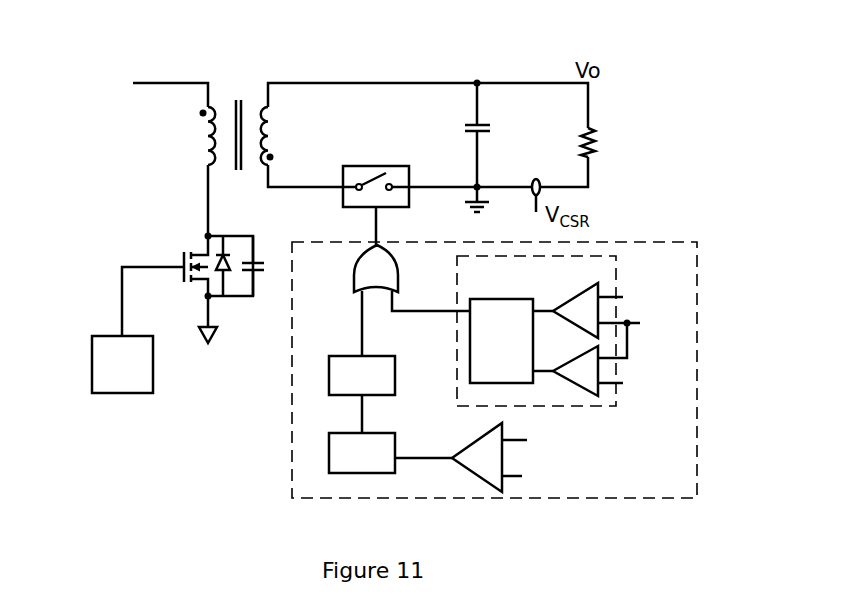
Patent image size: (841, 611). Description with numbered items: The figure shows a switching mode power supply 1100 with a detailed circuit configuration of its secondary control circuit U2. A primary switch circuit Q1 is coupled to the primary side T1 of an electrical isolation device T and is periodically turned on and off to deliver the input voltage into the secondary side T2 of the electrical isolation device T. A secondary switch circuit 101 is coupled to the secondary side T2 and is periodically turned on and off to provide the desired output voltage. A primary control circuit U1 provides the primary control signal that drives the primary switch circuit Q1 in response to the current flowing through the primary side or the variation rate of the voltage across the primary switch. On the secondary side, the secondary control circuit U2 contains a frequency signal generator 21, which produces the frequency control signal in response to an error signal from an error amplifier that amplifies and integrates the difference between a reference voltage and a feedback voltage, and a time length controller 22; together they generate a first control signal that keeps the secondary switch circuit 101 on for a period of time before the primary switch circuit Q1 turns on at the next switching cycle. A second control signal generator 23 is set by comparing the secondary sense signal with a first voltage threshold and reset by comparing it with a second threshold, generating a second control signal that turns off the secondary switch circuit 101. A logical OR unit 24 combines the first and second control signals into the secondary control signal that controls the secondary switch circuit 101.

The switching mode power supply 1100 is at (138, 71).
The secondary switch circuit 101 is at (366, 171).
The frequency signal generator 21 is at (446, 458).
The time length controller 22 is at (362, 394).
The second control signal generator 23 is at (490, 280).
The logical OR unit 24 is at (390, 283).
The primary control circuit U1 is at (138, 330).
The secondary control circuit U2 is at (678, 485).
The primary switch circuit Q1 is at (224, 254).
The electrical isolation device T is at (235, 119).
The primary side T1 is at (190, 136).
The secondary side T2 is at (282, 133).